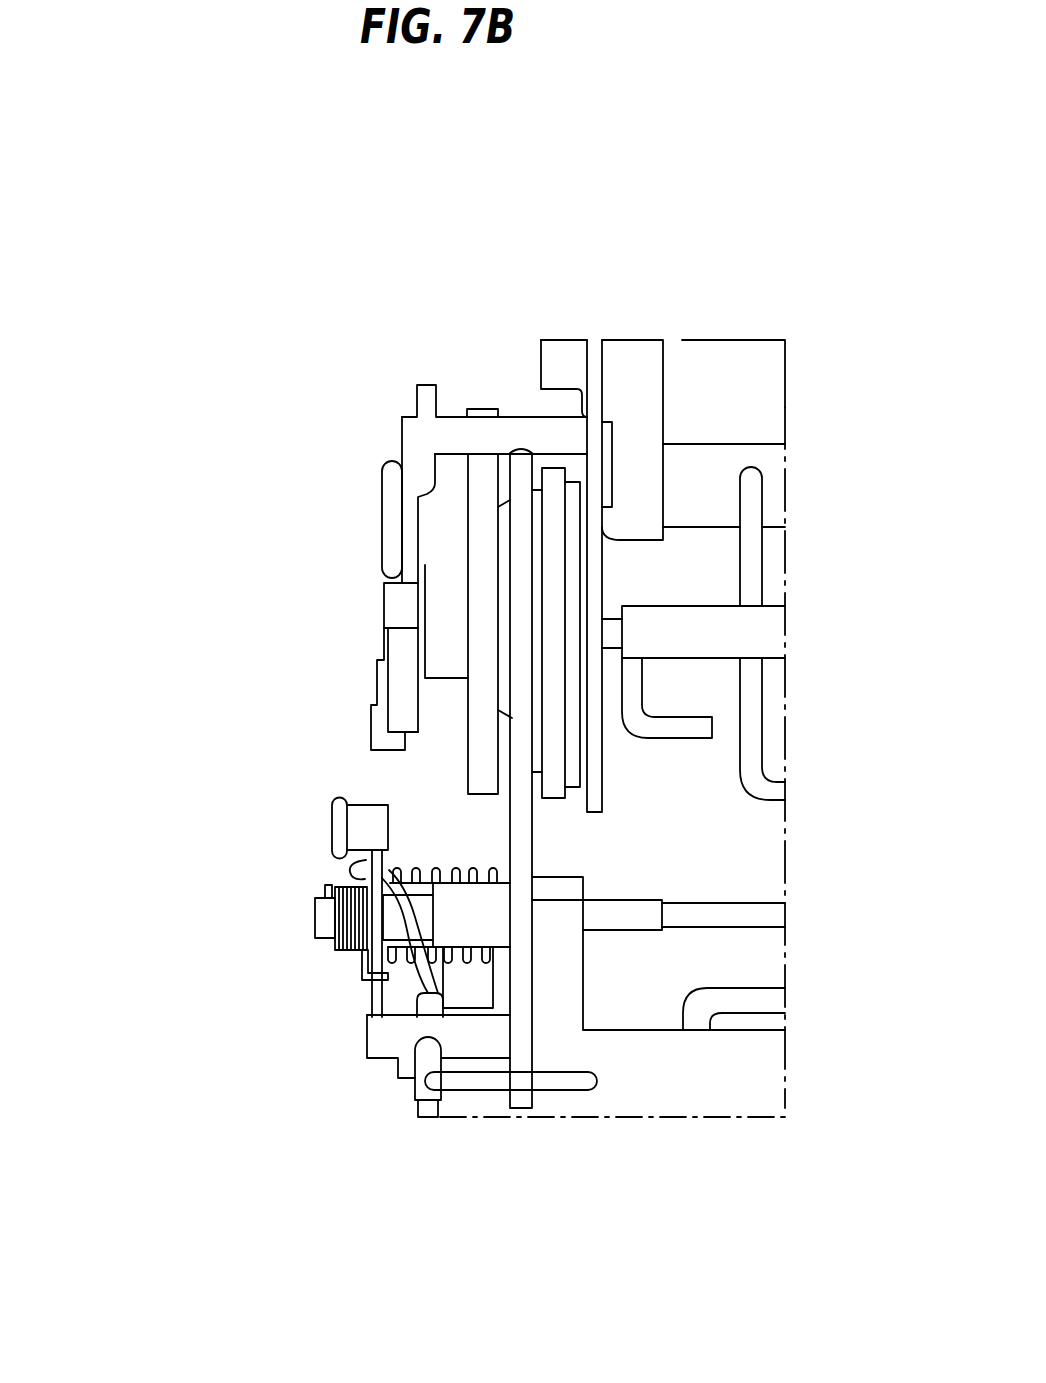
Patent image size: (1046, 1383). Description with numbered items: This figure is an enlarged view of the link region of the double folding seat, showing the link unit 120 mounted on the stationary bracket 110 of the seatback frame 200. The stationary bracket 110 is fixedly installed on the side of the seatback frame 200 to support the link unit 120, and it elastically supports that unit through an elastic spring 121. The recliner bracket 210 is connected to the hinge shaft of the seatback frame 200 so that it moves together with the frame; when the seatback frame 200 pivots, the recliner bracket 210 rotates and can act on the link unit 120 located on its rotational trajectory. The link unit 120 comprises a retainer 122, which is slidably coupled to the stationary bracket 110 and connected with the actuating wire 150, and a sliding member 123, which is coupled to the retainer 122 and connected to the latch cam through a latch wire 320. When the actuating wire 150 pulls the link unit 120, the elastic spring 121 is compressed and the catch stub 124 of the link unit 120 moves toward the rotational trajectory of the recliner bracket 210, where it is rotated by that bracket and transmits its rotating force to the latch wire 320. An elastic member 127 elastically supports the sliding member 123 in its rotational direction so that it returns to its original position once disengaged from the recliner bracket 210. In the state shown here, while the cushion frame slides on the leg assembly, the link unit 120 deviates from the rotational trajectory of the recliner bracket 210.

The stationary bracket 110 is at (522, 852).
The link unit 120 is at (243, 1213).
The elastic spring 121 is at (452, 870).
The retainer 122 is at (458, 922).
The sliding member 123 is at (367, 970).
The catch stub 124 is at (347, 825).
The elastic member 127 is at (315, 918).
The actuating wire 150 is at (708, 917).
The seatback frame 200 is at (633, 385).
The recliner bracket 210 is at (409, 488).
The latch wire 320 is at (425, 1097).